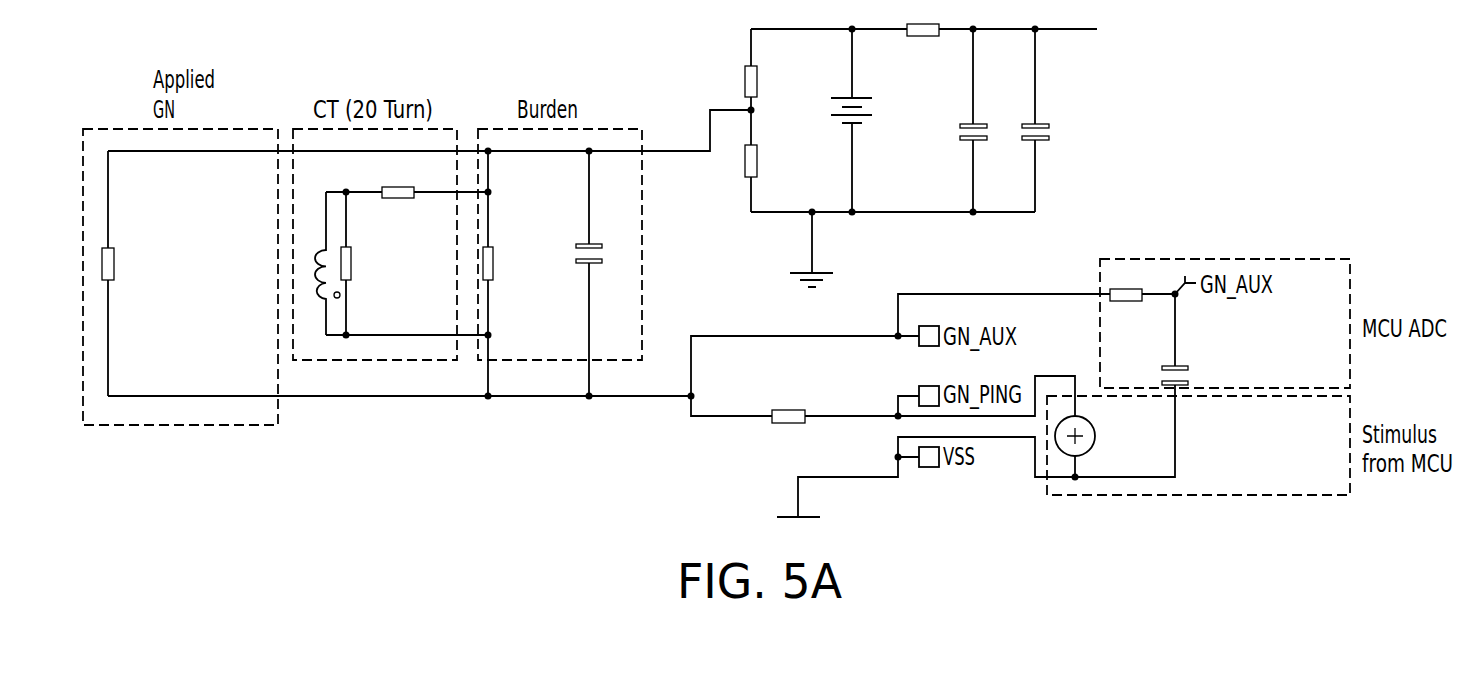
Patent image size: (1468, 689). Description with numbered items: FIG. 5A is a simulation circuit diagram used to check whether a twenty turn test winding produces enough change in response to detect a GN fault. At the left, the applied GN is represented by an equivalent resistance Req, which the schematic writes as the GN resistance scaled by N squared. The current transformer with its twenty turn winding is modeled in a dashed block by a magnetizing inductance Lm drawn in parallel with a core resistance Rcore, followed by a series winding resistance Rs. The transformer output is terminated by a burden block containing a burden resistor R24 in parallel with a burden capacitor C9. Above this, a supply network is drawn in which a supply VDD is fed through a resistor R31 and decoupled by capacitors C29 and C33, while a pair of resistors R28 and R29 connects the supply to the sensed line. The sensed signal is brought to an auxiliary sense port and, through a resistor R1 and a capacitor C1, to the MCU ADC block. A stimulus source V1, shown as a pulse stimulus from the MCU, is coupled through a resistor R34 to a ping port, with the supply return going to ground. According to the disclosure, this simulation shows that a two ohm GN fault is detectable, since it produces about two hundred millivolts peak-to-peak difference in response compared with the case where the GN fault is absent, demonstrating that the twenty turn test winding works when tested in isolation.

The equivalent applied GN resistance Req is at (187, 273).
The CT magnetizing inductance Lm is at (312, 263).
The CT core loss resistance Rcore is at (375, 263).
The CT series resistance Rs is at (398, 192).
The burden resistor R24 is at (510, 273).
The burden capacitor C9 is at (607, 273).
The bias resistor R28 is at (771, 69).
The bias resistor R29 is at (771, 161).
The 3.3V supply VDD is at (872, 120).
The supply resistor R31 is at (923, 34).
The decoupling capacitor C29 is at (986, 120).
The decoupling capacitor C33 is at (1055, 120).
The ping resistor R34 is at (787, 417).
The MCU ADC input resistor R1 is at (1126, 296).
The MCU ADC input capacitor C1 is at (1187, 339).
The stimulus voltage source V1 is at (1200, 431).